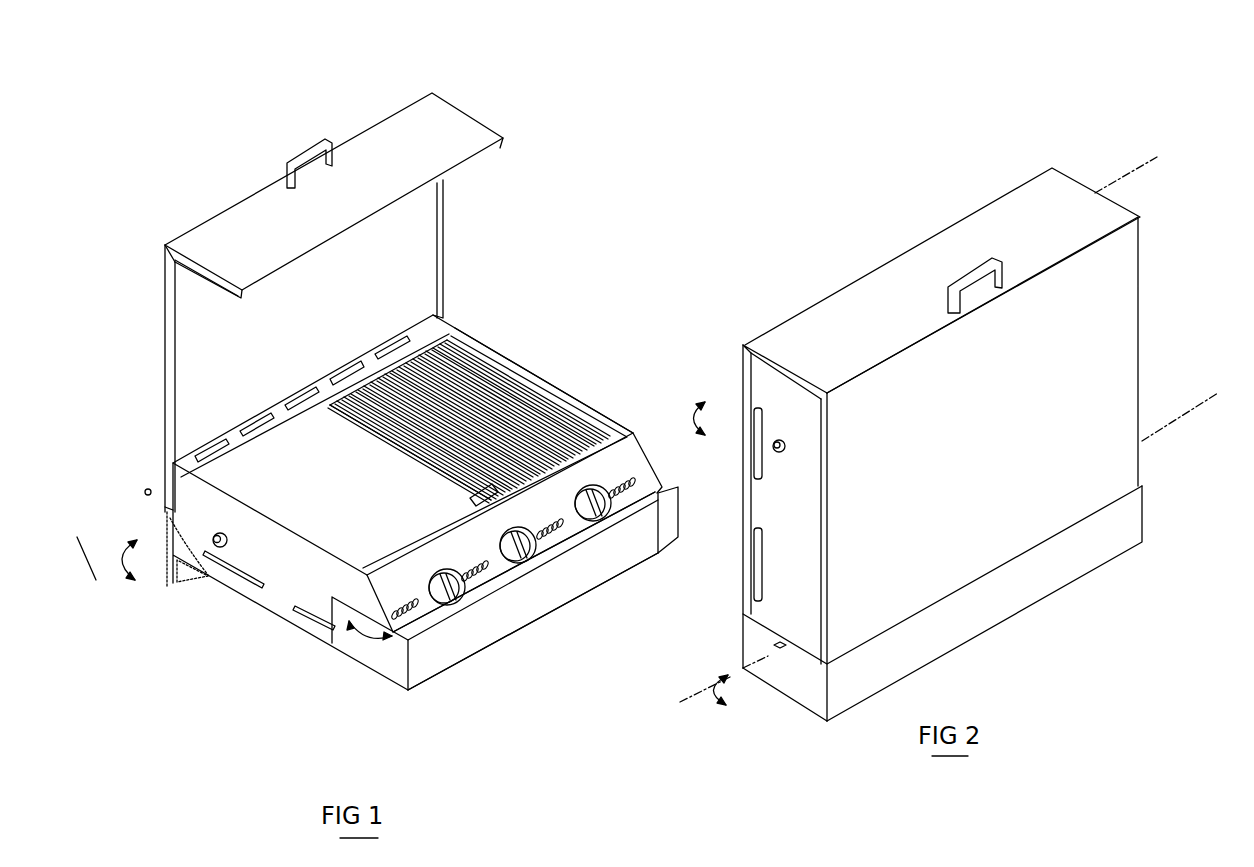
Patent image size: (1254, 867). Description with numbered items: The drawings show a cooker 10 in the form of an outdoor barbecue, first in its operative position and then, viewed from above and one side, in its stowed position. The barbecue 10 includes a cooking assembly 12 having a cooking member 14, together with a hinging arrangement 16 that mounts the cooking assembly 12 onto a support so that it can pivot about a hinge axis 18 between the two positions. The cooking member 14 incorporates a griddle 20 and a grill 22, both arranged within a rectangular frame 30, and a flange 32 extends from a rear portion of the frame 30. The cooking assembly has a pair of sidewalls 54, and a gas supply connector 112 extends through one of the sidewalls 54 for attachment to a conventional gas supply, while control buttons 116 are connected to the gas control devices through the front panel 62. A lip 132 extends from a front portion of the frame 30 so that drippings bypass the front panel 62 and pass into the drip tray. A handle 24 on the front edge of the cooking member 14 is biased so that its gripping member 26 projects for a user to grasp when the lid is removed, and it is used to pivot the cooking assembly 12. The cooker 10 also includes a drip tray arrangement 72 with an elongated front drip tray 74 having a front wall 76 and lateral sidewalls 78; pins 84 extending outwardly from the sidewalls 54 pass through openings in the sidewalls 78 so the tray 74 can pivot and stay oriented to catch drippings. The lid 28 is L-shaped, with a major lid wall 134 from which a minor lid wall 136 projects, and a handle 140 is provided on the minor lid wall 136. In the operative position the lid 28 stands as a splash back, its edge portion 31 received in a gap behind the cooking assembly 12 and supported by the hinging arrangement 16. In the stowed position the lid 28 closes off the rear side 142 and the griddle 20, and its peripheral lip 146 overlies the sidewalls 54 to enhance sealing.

In FIG. 1, the cooker 10 is at (611, 240).
In FIG. 2, the cooker 10 is at (1137, 145).
In FIG. 1, the cooking assembly 12 is at (537, 357).
In FIG. 1, the cooking member 14 is at (323, 520).
In FIG. 1, the hinging arrangement 16 is at (167, 598).
In FIG. 1, the hinge axis 18 is at (129, 540).
In FIG. 2, the hinge axis 18 is at (1160, 158).
In FIG. 1, the griddle 20 is at (308, 494).
In FIG. 1, the grill 22 is at (547, 415).
In FIG. 1, the handle 24 is at (465, 494).
In FIG. 1, the gripping member 26 is at (488, 482).
In FIG. 1, the lid 28 is at (480, 124).
In FIG. 1, the rectangular frame 30 is at (612, 414).
In FIG. 1, the edge portion 31 is at (165, 507).
In FIG. 1, the flange 32 is at (443, 317).
In FIG. 1, the sidewalls 54 is at (313, 593).
In FIG. 2, the sidewalls 54 is at (783, 582).
In FIG. 1, the front panel 62 is at (659, 520).
In FIG. 1, the drip tray arrangement 72 is at (482, 665).
In FIG. 2, the drip tray arrangement 72 is at (810, 733).
In FIG. 1, the front drip tray 74 is at (542, 615).
In FIG. 2, the front drip tray 74 is at (1046, 593).
In FIG. 1, the front wall 76 is at (602, 567).
In FIG. 2, the front wall 76 is at (985, 614).
In FIG. 1, the lateral sidewalls 78 is at (370, 652).
In FIG. 2, the lateral sidewalls 78 is at (785, 681).
In FIG. 1, the pins 84 is at (370, 623).
In FIG. 2, the pins 84 is at (778, 645).
In FIG. 1, the gas supply connector 112 is at (216, 548).
In FIG. 2, the gas supply connector 112 is at (781, 454).
In FIG. 1, the control buttons 116 is at (475, 604).
In FIG. 1, the lip 132 is at (423, 608).
In FIG. 1, the major lid wall 134 is at (197, 352).
In FIG. 2, the major lid wall 134 is at (1115, 345).
In FIG. 1, the minor lid wall 136 is at (233, 236).
In FIG. 2, the minor lid wall 136 is at (818, 327).
In FIG. 1, the handle 140 is at (303, 150).
In FIG. 2, the handle 140 is at (965, 272).
In FIG. 1, the rear side 142 is at (145, 490).
In FIG. 1, the peripheral lip 146 is at (447, 231).
In FIG. 2, the peripheral lip 146 is at (762, 360).